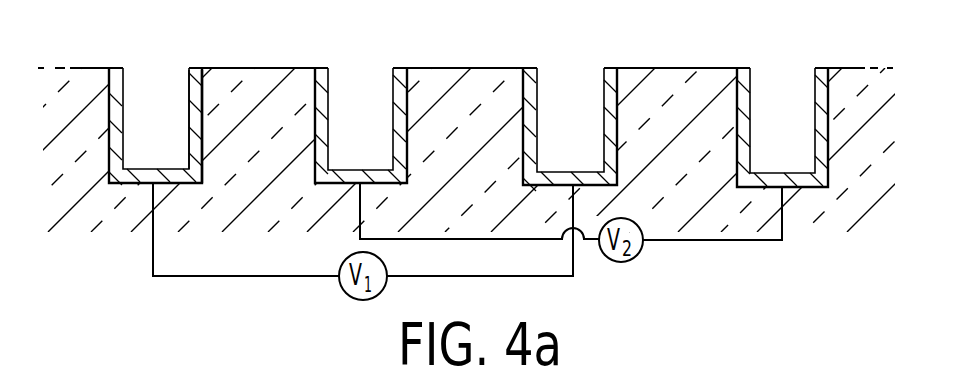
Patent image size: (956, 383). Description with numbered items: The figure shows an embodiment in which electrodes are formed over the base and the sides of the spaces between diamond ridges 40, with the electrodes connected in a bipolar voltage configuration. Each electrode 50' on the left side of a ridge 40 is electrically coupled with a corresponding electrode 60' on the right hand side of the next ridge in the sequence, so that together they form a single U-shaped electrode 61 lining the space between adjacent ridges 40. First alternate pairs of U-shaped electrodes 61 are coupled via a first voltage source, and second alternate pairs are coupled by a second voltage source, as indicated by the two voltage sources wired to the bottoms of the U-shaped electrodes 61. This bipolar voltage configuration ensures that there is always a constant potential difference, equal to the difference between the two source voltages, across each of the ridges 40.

The diamond ridge 40 is at (248, 68).
The electrode 50' is at (193, 92).
The electrode 60' is at (254, 93).
The U-shaped electrode 61 is at (586, 106).